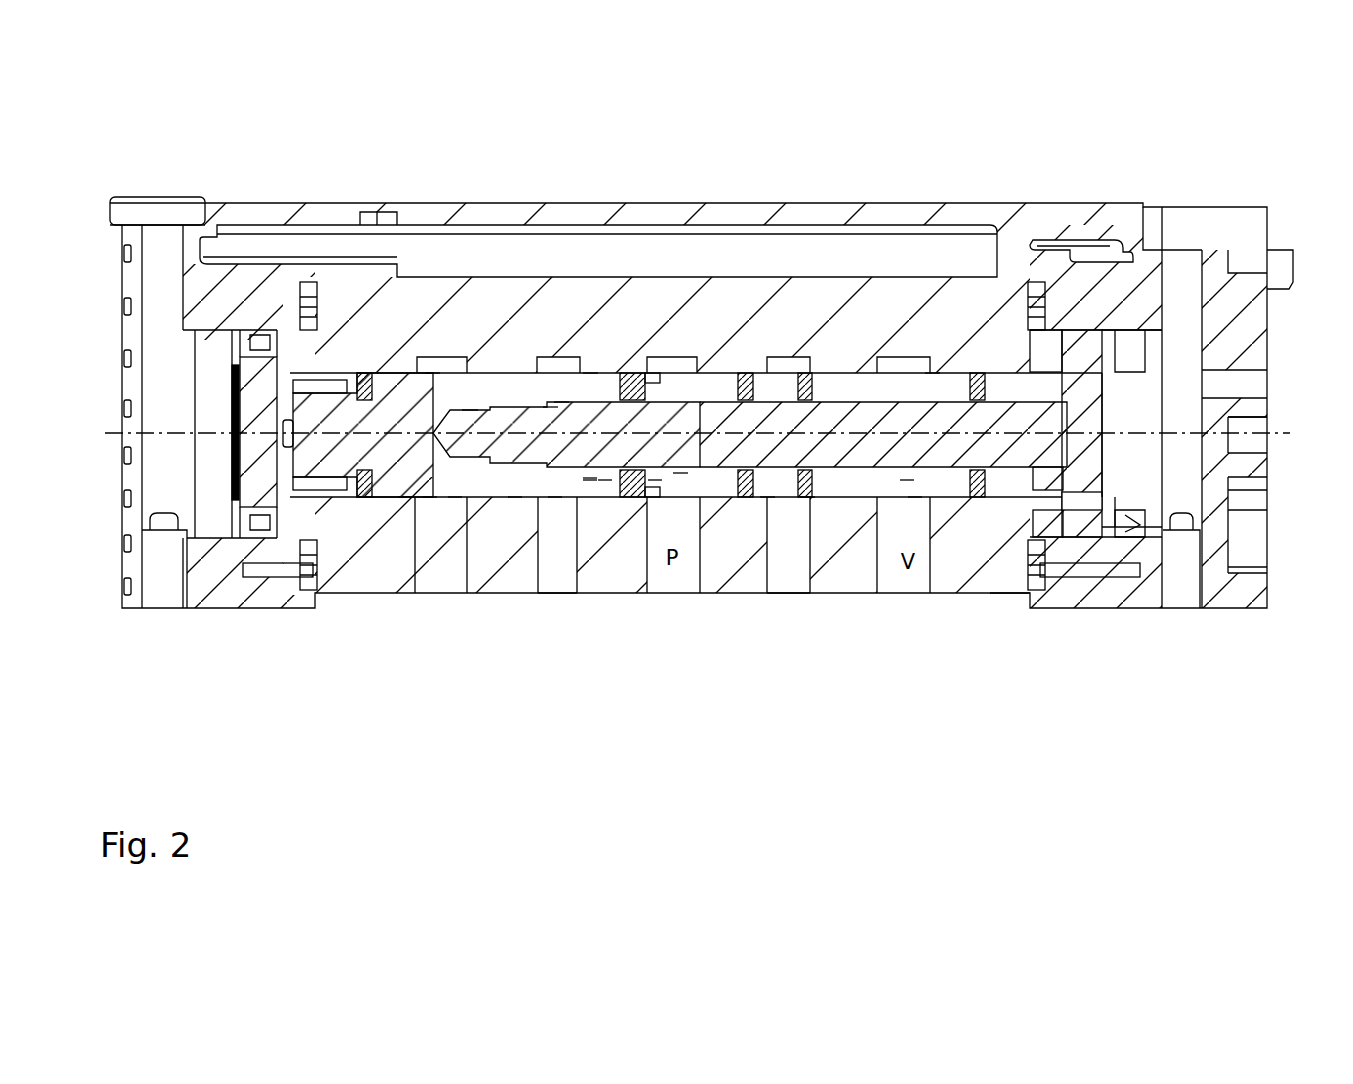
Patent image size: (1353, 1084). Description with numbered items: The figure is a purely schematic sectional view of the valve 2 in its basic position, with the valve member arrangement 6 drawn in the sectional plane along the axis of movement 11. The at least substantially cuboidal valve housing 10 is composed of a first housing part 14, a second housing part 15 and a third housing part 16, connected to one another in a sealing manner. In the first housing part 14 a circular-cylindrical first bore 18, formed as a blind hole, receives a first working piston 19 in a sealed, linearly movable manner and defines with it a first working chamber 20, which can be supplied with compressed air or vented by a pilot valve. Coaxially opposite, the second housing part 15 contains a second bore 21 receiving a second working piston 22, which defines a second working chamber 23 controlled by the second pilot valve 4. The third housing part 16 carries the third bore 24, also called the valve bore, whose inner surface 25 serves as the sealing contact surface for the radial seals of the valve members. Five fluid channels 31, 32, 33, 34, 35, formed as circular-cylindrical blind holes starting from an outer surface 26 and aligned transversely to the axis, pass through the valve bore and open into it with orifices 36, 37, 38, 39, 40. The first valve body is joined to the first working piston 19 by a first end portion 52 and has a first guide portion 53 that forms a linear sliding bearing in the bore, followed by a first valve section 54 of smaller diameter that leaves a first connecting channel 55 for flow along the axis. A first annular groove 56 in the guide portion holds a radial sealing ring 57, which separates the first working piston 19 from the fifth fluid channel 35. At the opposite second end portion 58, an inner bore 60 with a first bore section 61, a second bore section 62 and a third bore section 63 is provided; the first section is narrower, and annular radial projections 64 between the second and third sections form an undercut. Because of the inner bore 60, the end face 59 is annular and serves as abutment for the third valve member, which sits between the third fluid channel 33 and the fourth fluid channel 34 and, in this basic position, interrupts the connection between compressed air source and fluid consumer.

The valve housing 10 is at (855, 200).
The third housing part 16 is at (335, 593).
The first housing part 14 is at (135, 596).
The first working chamber 20 is at (204, 510).
The first bore 18 is at (237, 343).
The first working piston 19 is at (232, 398).
The first end portion 52 is at (305, 400).
The first annular groove 56 is at (350, 395).
The radial sealing ring 57 is at (360, 505).
The valve member arrangement 6 is at (513, 365).
The first guide portion 53 is at (430, 377).
The inner bore 60 is at (470, 396).
The radial projections 64 is at (550, 398).
The first valve section 54 is at (561, 390).
The first connecting channel 55 is at (590, 377).
The inner surface 25 is at (690, 398).
The third bore 24 is at (933, 383).
The third bore section 63 is at (640, 482).
The second housing part 15 is at (1253, 298).
The second bore 21 is at (1130, 382).
The second working piston 22 is at (1130, 390).
The axis of movement 11 is at (1247, 433).
The second working chamber 23 is at (1160, 522).
The outer surface 26 is at (1009, 602).
The first fluid channel 31 is at (915, 500).
The second fluid channel 32 is at (808, 500).
The third fluid channel 33 is at (680, 473).
The fourth fluid channel 34 is at (590, 480).
The fifth fluid channel 35 is at (455, 497).
The orifice 36 is at (907, 480).
The orifice 37 is at (768, 500).
The orifice 38 is at (655, 480).
The orifice 39 is at (555, 497).
The orifice 40 is at (430, 497).
The second end portion 58 is at (590, 478).
The end face 59 is at (605, 480).
The first bore section 61 is at (405, 497).
The second bore section 62 is at (515, 497).
The valve 2 is at (557, 571).
The second pilot valve 4 is at (788, 571).